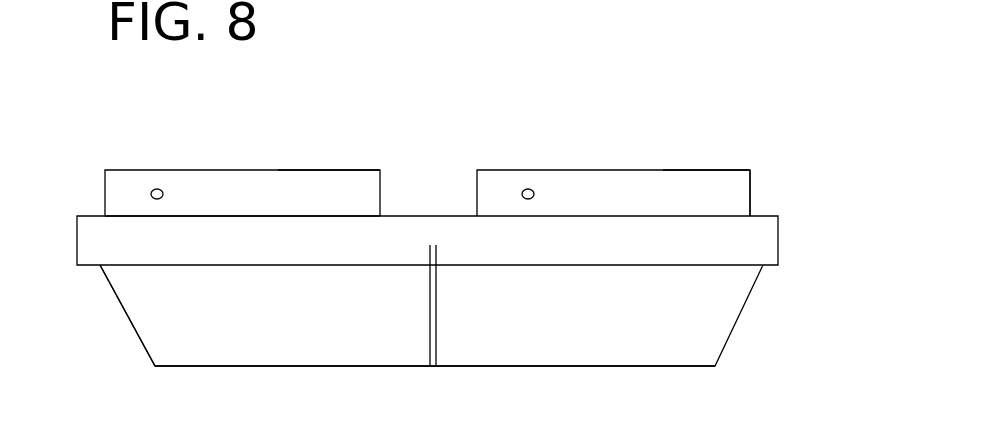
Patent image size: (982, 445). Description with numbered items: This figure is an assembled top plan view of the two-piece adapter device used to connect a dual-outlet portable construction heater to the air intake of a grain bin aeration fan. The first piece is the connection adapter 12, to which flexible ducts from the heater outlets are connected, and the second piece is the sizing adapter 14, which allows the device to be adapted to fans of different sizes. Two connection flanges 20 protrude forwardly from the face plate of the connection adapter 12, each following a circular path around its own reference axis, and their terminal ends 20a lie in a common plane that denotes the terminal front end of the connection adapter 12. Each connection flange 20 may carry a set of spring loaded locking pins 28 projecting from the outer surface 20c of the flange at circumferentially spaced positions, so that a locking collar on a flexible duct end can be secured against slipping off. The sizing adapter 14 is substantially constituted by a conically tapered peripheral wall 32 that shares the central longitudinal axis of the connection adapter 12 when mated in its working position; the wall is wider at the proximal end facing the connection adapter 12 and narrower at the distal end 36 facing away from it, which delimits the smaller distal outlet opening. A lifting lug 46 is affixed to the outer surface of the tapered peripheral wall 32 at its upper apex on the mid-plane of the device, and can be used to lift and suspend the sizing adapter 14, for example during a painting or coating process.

The connection adapter 12 is at (126, 151).
The sizing adapter 14 is at (727, 349).
The connection flange 20 is at (349, 185).
The terminal end of connection flange 20a is at (278, 170).
The outer surface of connection flange 20c is at (219, 200).
The spring loaded locking pin 28 is at (160, 190).
The conically tapered peripheral wall 32 is at (163, 298).
The distal end of peripheral wall 36 is at (618, 366).
The lifting lug 46 is at (429, 349).